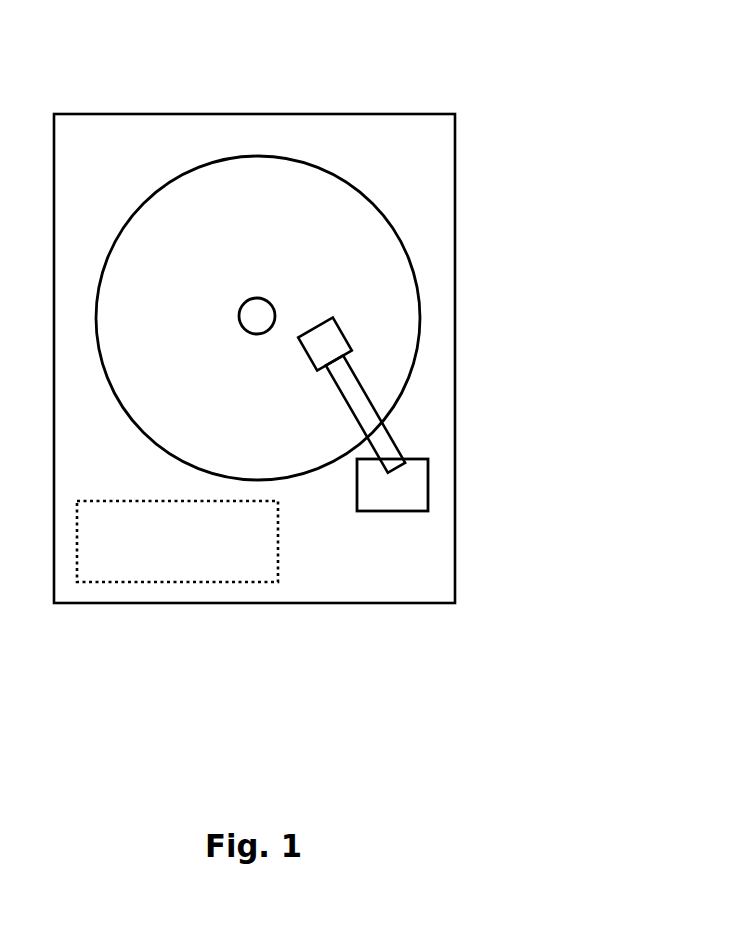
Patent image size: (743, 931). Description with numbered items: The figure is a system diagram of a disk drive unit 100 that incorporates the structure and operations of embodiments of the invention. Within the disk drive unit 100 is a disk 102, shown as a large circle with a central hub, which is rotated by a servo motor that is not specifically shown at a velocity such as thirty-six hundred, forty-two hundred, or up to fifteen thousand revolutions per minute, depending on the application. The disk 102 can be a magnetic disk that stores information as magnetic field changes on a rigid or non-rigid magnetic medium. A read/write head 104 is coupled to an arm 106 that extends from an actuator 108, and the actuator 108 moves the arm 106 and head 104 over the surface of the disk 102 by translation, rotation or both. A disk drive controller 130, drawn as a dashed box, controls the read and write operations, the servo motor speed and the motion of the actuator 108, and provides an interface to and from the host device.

The disk drive unit 100 is at (495, 73).
The disk 102 is at (155, 190).
The read/write head 104 is at (352, 350).
The arm 106 is at (368, 401).
The actuator 108 is at (357, 497).
The disk drive controller 130 is at (177, 541).